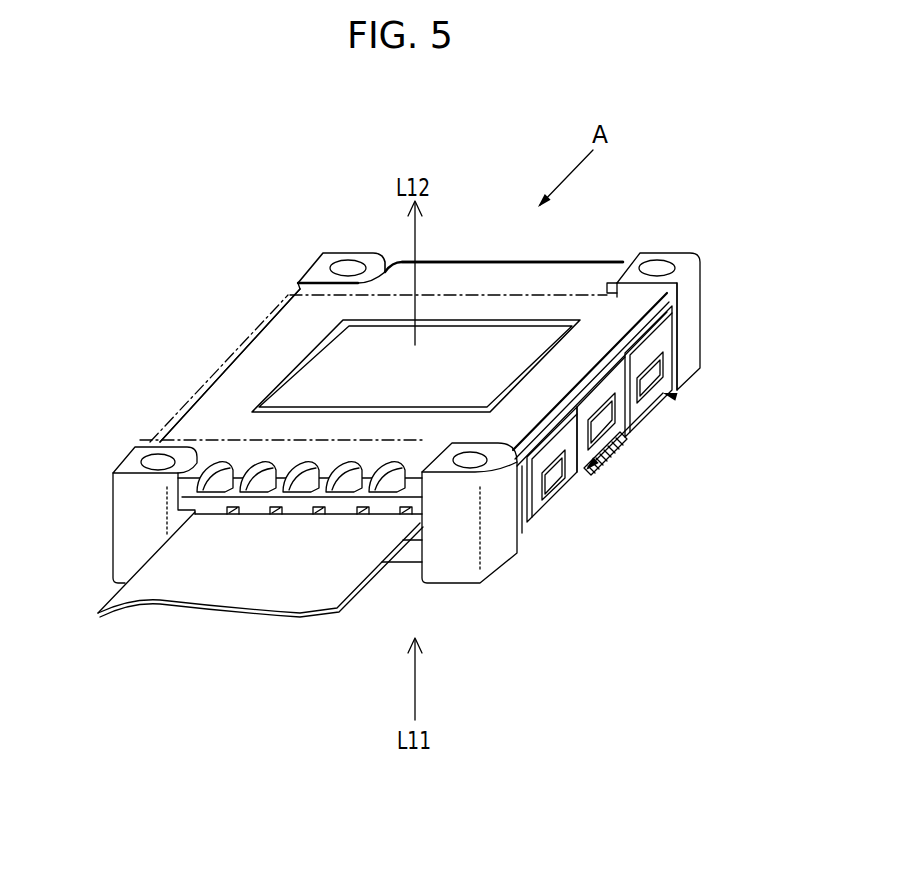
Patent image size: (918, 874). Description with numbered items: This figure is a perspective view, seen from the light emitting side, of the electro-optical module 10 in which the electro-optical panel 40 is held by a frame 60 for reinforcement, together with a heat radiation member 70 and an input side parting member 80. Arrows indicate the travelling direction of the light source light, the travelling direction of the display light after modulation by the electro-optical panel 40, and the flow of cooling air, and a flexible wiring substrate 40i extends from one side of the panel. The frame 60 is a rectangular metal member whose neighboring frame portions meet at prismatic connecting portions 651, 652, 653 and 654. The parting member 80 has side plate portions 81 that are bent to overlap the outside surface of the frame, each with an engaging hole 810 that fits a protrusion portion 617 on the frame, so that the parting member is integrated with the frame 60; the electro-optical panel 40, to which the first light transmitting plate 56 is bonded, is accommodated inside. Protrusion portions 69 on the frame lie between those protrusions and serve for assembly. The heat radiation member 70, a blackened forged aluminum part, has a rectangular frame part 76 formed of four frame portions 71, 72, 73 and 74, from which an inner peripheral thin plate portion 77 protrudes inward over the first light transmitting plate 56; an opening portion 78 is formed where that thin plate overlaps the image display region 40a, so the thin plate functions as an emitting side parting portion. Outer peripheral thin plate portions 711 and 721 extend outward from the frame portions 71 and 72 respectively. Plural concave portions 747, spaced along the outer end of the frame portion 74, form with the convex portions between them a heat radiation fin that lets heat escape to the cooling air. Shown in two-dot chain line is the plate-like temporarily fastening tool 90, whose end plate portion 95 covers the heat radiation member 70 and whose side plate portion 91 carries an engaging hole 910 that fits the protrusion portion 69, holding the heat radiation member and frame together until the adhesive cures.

The electro-optical module 10 is at (278, 282).
The electro-optical panel 40 is at (442, 325).
The image display region 40a is at (288, 328).
The flexible wiring substrate 40i is at (258, 580).
The first light transmitting plate 56 is at (487, 337).
The frame 60 is at (592, 473).
The protrusion portion 69 is at (623, 430).
The heat radiation member 70 is at (571, 270).
The frame portion 71 is at (530, 374).
The frame portion 72 is at (277, 348).
The frame portion 73 is at (480, 307).
The frame portion 74 is at (306, 450).
The rectangular frame part 76 is at (222, 392).
The inner peripheral thin plate portion 77 is at (282, 373).
The opening portion 78 is at (380, 310).
The input side parting member 80 is at (676, 397).
The side plate portion 81 is at (667, 338).
The temporarily fastening tool 90 is at (605, 290).
The side plate portion 91 is at (623, 447).
The end plate portion 95 is at (530, 308).
The protrusion portion 617 is at (678, 373).
The connecting portion 651 is at (697, 300).
The connecting portion 652 is at (320, 273).
The connecting portion 653 is at (463, 553).
The connecting portion 654 is at (117, 498).
The outer peripheral thin plate portion 711 is at (612, 345).
The outer peripheral thin plate portion 721 is at (277, 307).
The concave portions 747 is at (263, 465).
The engaging hole 810 is at (650, 390).
The engaging hole 910 is at (615, 452).